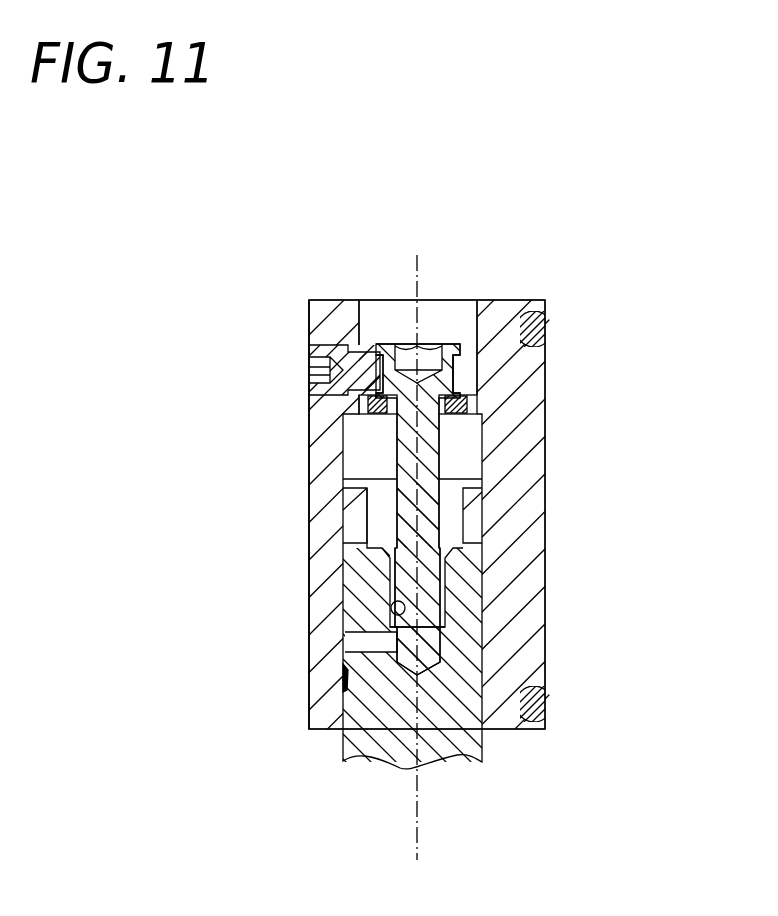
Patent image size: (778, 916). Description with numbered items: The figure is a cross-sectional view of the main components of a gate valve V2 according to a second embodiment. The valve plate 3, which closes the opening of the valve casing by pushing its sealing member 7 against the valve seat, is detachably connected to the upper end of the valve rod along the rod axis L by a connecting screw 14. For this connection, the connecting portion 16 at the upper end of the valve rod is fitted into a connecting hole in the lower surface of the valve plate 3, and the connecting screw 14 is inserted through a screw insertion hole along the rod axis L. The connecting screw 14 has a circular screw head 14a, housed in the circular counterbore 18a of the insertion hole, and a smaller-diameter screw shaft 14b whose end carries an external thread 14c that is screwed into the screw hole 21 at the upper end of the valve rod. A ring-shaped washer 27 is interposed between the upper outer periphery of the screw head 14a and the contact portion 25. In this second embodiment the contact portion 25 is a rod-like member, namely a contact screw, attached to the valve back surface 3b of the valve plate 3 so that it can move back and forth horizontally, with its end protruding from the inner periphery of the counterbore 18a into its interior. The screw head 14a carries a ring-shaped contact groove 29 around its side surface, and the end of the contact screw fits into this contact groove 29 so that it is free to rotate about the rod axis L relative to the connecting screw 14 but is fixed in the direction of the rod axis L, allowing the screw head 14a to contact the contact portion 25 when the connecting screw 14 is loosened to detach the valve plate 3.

The gate valve V2 is at (608, 228).
The valve plate 3 is at (327, 598).
The valve back surface 3b is at (307, 512).
The sealing member 7 is at (533, 703).
The connecting screw 14 is at (443, 458).
The screw head 14a is at (388, 350).
The screw shaft 14b is at (423, 505).
The external thread 14c is at (427, 585).
The connecting portion 16 is at (435, 740).
The counterbore 18a is at (447, 322).
The screw hole 21 is at (343, 676).
The contact portion 25 is at (360, 373).
The washer 27 is at (465, 407).
The contact groove 29 is at (457, 381).
The rod axis L is at (420, 534).